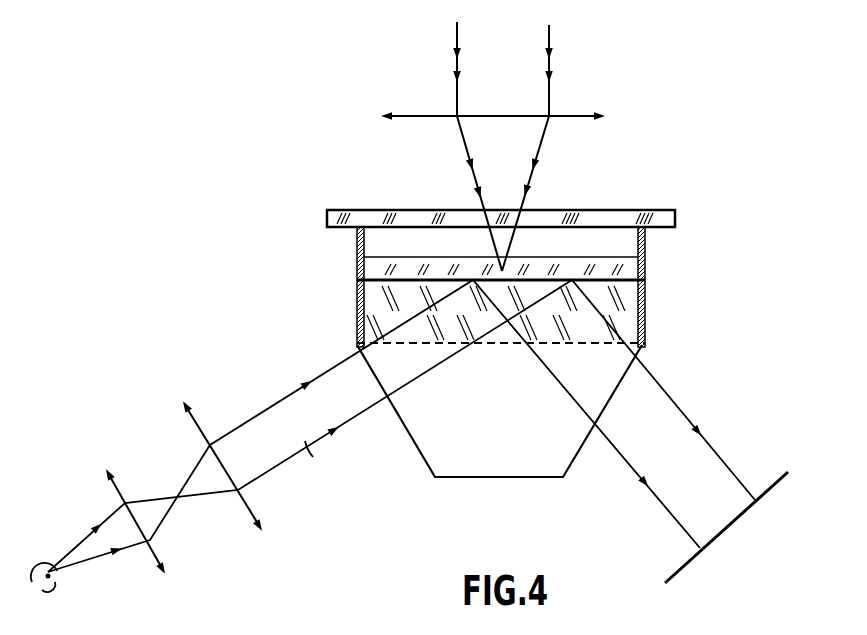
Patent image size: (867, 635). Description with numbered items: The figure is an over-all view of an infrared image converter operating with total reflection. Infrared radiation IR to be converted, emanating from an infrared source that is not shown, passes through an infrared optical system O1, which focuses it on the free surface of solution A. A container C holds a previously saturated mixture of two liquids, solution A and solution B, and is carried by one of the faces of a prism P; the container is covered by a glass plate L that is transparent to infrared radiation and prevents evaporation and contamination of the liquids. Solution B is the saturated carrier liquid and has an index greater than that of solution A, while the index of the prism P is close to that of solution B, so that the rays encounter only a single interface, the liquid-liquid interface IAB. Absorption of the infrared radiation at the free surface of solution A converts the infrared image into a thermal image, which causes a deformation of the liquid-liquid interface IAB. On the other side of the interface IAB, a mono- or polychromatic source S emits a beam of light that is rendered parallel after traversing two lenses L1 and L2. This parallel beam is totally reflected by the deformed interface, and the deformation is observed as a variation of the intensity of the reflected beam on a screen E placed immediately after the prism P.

The infrared radiation IR is at (517, 140).
The infrared optical system O1 is at (513, 120).
The glass plate L is at (670, 214).
The container C is at (357, 323).
The solution A is at (622, 268).
The solution B is at (622, 310).
The liquid-liquid interface IAB is at (350, 280).
The prism P is at (470, 460).
The mono- or polychromatic source S is at (50, 583).
The lens L1 is at (125, 510).
The lens L2 is at (223, 455).
The screen E is at (726, 515).